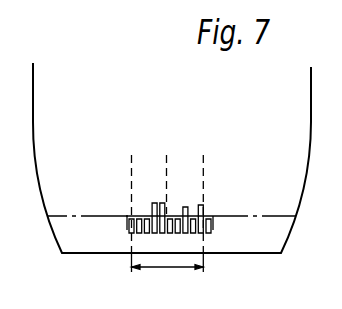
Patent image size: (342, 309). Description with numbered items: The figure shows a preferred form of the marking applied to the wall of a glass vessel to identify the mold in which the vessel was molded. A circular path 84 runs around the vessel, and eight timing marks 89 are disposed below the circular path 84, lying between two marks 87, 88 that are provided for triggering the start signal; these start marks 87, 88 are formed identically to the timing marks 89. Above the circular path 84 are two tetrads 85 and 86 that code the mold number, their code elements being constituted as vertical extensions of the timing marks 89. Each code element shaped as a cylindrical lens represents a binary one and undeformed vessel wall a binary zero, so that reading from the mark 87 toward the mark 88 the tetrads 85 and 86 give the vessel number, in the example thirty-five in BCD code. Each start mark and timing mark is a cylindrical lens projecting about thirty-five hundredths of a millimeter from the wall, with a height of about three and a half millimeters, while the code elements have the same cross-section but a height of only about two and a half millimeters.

The circular path 84 is at (266, 215).
The tetrad 85 is at (147, 172).
The tetrad 86 is at (186, 177).
The mark 87 is at (128, 227).
The mark 88 is at (211, 229).
The timing marks 89 is at (165, 268).